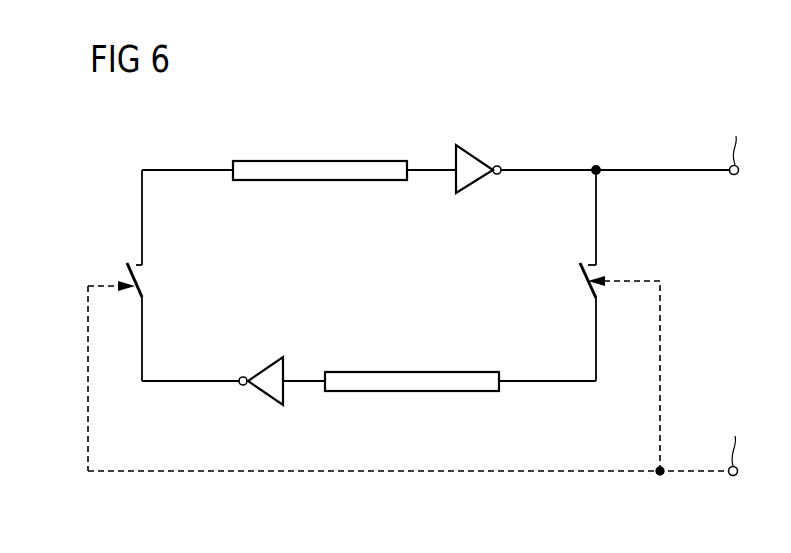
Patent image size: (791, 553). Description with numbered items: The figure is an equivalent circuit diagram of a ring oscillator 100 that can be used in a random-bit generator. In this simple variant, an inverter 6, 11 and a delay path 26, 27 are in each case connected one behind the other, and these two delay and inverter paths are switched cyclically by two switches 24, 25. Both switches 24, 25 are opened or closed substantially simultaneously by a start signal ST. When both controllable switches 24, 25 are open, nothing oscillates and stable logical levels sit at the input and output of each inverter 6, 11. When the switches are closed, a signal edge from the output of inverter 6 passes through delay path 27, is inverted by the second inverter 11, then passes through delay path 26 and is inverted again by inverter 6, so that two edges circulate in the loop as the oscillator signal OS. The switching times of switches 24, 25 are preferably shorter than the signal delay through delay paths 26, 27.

The ring oscillator 100 is at (139, 118).
The delay path 26 is at (305, 160).
The inverter 6 is at (475, 156).
The controllable switch 24 is at (160, 270).
The controllable switch 25 is at (618, 262).
The second inverter 11 is at (267, 364).
The delay path 27 is at (398, 371).